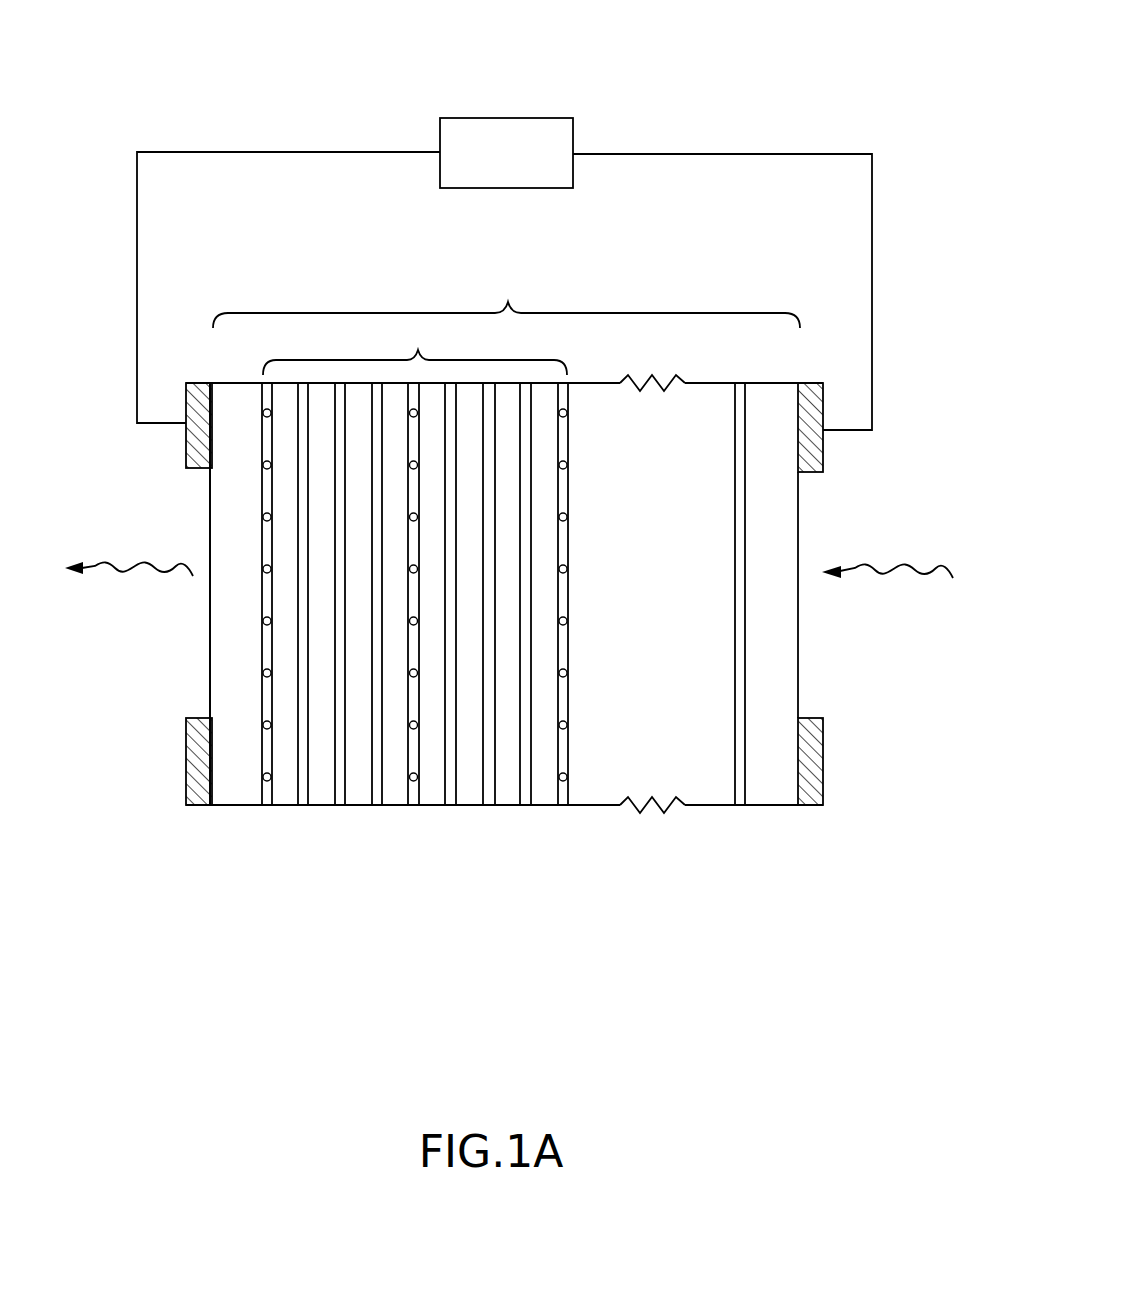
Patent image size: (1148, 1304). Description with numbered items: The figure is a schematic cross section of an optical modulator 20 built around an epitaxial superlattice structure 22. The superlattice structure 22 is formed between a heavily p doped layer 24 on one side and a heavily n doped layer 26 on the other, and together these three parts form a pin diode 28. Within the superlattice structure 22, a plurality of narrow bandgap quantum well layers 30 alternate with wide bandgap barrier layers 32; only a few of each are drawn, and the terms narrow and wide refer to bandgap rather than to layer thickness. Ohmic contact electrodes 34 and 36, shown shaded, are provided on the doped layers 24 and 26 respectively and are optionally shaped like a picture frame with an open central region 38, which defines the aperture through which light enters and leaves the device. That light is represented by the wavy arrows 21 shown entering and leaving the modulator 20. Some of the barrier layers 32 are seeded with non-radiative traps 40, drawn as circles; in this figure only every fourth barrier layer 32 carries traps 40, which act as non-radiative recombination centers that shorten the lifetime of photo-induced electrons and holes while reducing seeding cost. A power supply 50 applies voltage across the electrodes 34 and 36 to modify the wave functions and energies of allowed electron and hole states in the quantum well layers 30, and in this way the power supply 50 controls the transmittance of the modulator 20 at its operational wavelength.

The optical modulator 20 is at (690, 110).
The wavy arrows 21 is at (133, 568).
The superlattice structure 22 is at (415, 349).
The heavily p doped layer 24 is at (782, 797).
The heavily n doped layer 26 is at (247, 795).
The pin diode 28 is at (506, 298).
The quantum well layers 30 is at (400, 805).
The barrier layers 32 is at (450, 805).
The ohmic contact electrode 34 is at (824, 752).
The ohmic contact electrode 36 is at (186, 775).
The open central region 38 is at (192, 484).
The traps 40 is at (258, 670).
The power supply 50 is at (492, 118).